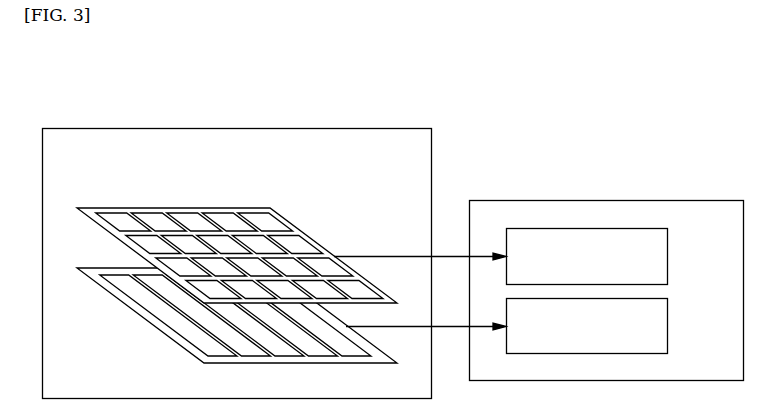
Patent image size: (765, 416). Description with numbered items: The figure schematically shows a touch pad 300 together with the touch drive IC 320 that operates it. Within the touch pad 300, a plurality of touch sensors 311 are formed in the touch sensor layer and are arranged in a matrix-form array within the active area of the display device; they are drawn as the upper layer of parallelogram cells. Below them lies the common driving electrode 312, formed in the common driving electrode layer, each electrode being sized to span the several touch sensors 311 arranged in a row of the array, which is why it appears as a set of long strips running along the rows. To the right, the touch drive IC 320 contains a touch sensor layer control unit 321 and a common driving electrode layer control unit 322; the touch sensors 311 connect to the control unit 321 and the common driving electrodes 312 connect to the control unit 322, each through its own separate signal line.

The touch panel 300 is at (363, 127).
The touch sensors 311 is at (111, 211).
The common driving electrode 312 is at (166, 316).
The touch drive IC 320 is at (606, 199).
The touch sensor layer control unit 321 is at (668, 256).
The common driving electrode layer control unit 322 is at (668, 326).